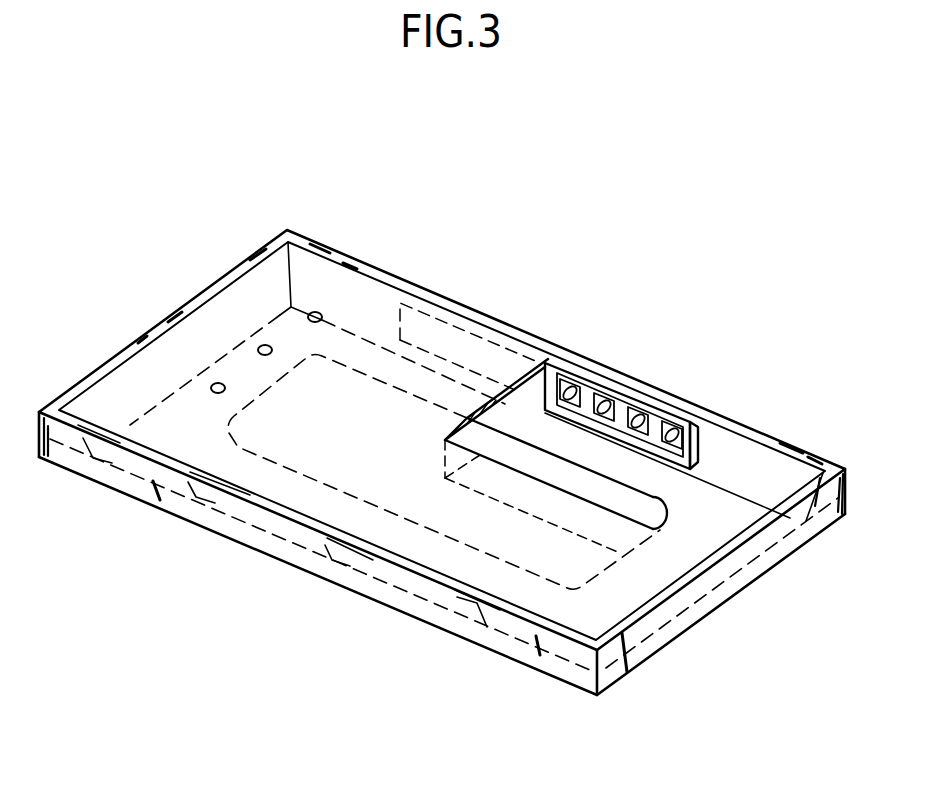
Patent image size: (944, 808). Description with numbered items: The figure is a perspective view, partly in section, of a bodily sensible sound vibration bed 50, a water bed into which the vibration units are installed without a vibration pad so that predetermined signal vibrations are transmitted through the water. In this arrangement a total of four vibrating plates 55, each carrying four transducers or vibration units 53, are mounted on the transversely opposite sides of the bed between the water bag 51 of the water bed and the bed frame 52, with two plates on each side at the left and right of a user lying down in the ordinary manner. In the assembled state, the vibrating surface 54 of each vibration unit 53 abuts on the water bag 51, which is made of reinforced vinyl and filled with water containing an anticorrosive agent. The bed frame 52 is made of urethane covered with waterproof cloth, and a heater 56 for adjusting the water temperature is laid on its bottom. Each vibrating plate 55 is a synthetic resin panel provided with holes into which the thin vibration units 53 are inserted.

The bodily sensible sound vibration bed 50 is at (362, 193).
The water bag 51 is at (545, 362).
The bed frame 52 is at (398, 280).
The vibration unit 53 is at (655, 395).
The vibrating surface 54 is at (637, 400).
The vibrating plate 55 is at (458, 330).
The heater 56 is at (270, 450).